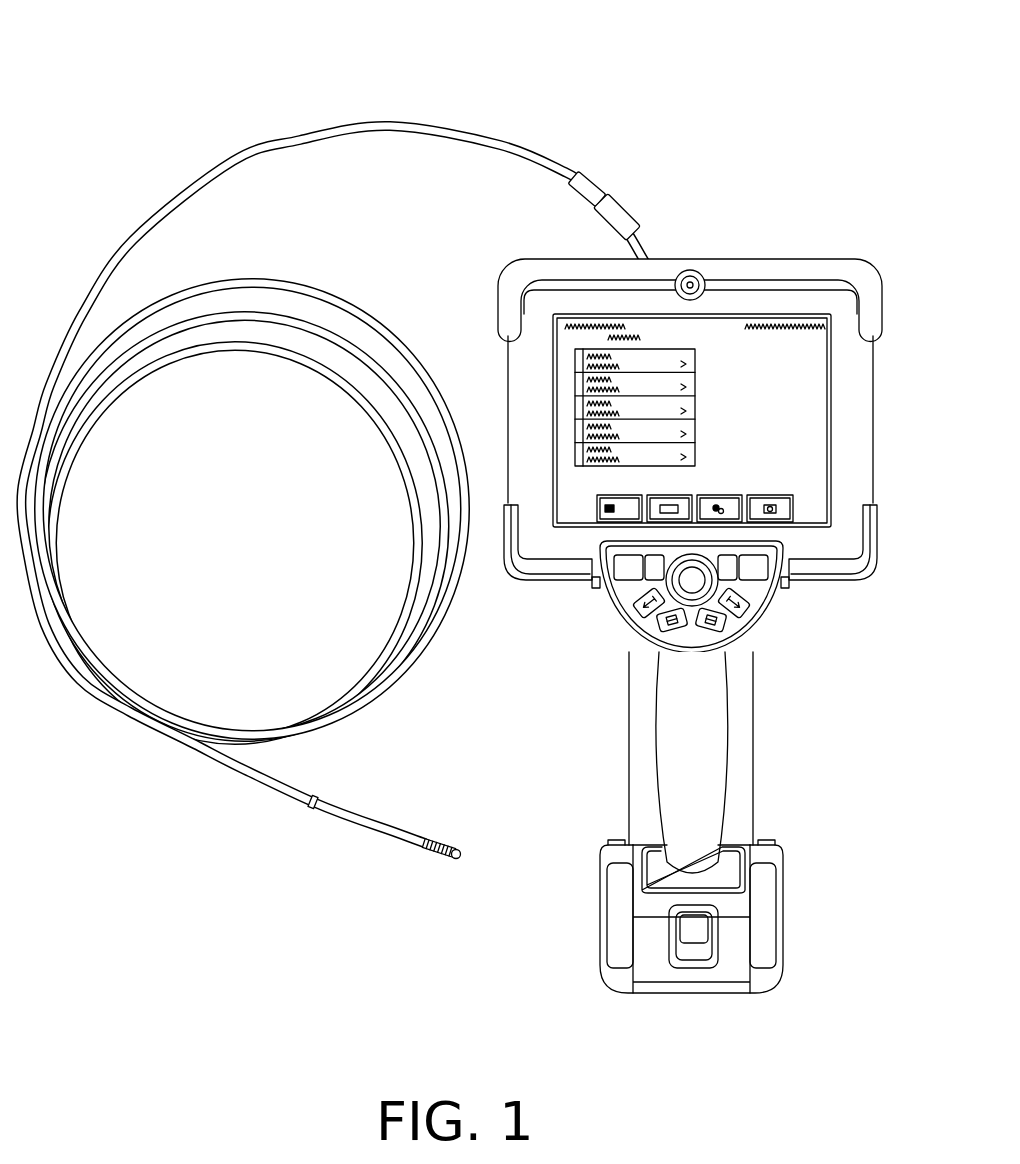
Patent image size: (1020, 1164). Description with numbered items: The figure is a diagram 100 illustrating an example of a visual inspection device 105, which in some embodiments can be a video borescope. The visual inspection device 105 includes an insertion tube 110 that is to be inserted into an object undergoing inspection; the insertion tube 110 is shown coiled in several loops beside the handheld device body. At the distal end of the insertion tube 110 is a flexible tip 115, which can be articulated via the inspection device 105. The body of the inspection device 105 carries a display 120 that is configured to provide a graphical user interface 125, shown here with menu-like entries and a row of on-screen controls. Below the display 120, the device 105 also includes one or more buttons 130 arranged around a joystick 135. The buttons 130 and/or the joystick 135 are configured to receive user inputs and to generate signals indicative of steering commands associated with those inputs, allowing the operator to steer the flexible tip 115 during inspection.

The diagram 100 is at (480, 502).
The visual inspection device 105 is at (812, 263).
The insertion tube 110 is at (138, 673).
The flexible tip 115 is at (448, 836).
The display 120 is at (842, 410).
The graphical user interface 125 is at (770, 532).
The buttons 130 is at (767, 576).
The joystick 135 is at (724, 590).